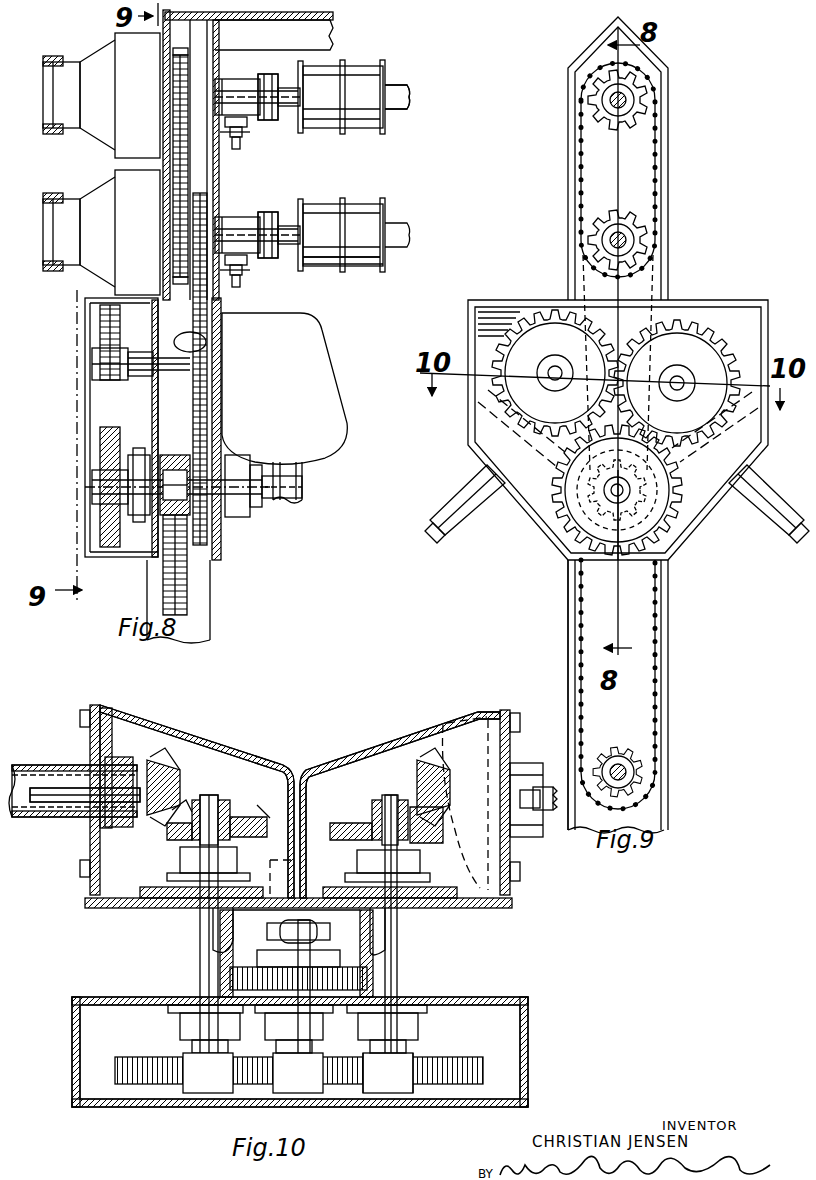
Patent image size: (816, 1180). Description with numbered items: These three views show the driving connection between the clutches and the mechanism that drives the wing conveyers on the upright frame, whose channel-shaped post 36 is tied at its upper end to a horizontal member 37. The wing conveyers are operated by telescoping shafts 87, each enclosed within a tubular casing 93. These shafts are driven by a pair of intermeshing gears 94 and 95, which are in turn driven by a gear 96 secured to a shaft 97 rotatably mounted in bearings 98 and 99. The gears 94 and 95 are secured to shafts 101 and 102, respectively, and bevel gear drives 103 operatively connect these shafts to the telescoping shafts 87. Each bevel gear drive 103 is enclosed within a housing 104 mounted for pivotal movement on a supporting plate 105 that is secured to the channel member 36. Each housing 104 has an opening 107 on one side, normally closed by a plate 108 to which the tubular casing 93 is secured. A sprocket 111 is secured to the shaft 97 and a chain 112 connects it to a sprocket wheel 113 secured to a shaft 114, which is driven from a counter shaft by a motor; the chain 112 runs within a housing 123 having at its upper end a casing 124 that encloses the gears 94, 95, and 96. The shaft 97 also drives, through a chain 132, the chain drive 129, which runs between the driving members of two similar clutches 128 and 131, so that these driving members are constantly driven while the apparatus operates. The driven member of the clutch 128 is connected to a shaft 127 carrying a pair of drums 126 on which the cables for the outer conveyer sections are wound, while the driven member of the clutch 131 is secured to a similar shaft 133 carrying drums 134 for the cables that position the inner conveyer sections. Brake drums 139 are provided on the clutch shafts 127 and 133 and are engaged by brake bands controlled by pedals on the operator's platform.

In FIG. 8, the channel-shaped post 36 is at (212, 598).
In FIG. 9, the channel-shaped post 36 is at (670, 160).
In FIG. 10, the channel-shaped post 36 is at (225, 950).
In FIG. 8, the horizontal member 37 is at (322, 28).
In FIG. 9, the telescoping shaft 87 is at (450, 535).
In FIG. 10, the telescoping shaft 87 is at (35, 805).
In FIG. 8, the tubular casing 93 is at (304, 484).
In FIG. 9, the tubular casing 93 is at (460, 481).
In FIG. 10, the tubular casing 93 is at (24, 766).
In FIG. 8, the gear 94 is at (100, 322).
In FIG. 9, the gear 94 is at (530, 312).
In FIG. 10, the gear 94 is at (143, 1085).
In FIG. 9, the gear 95 is at (706, 312).
In FIG. 10, the gear 95 is at (470, 1068).
In FIG. 8, the gear 96 is at (100, 520).
In FIG. 9, the gear 96 is at (562, 512).
In FIG. 8, the shaft 97 is at (92, 487).
In FIG. 9, the shaft 97 is at (603, 505).
In FIG. 8, the bearing 98 is at (135, 462).
In FIG. 8, the bearing 99 is at (246, 500).
In FIG. 8, the shaft 101 is at (94, 367).
In FIG. 9, the shaft 101 is at (555, 368).
In FIG. 10, the shaft 101 is at (200, 937).
In FIG. 9, the shaft 102 is at (677, 378).
In FIG. 10, the shaft 102 is at (398, 935).
In FIG. 10, the bevel gear drive 103 is at (213, 790).
In FIG. 8, the housing 104 is at (306, 342).
In FIG. 10, the housing 104 is at (190, 735).
In FIG. 10, the supporting plate 105 is at (110, 908).
In FIG. 10, the opening 107 is at (106, 735).
In FIG. 10, the plate 108 is at (85, 732).
In FIG. 8, the sprocket 111 is at (180, 505).
In FIG. 9, the sprocket 111 is at (642, 540).
In FIG. 8, the chain 112 is at (187, 583).
In FIG. 9, the chain 112 is at (656, 642).
In FIG. 10, the chain 112 is at (365, 983).
In FIG. 9, the sprocket wheel 113 is at (636, 742).
In FIG. 9, the shaft 114 is at (626, 776).
In FIG. 9, the housing 123 is at (668, 694).
In FIG. 8, the casing 124 is at (80, 414).
In FIG. 9, the casing 124 is at (470, 428).
In FIG. 8, the drum 126 is at (366, 78).
In FIG. 8, the shaft 127 is at (405, 95).
In FIG. 8, the clutch 128 is at (126, 46).
In FIG. 8, the chain drive 129 is at (195, 172).
In FIG. 8, the clutch 131 is at (126, 183).
In FIG. 8, the chain 132 is at (200, 345).
In FIG. 8, the shaft 133 is at (400, 228).
In FIG. 8, the drum 134 is at (378, 258).
In FIG. 8, the brake drum 139 is at (265, 80).